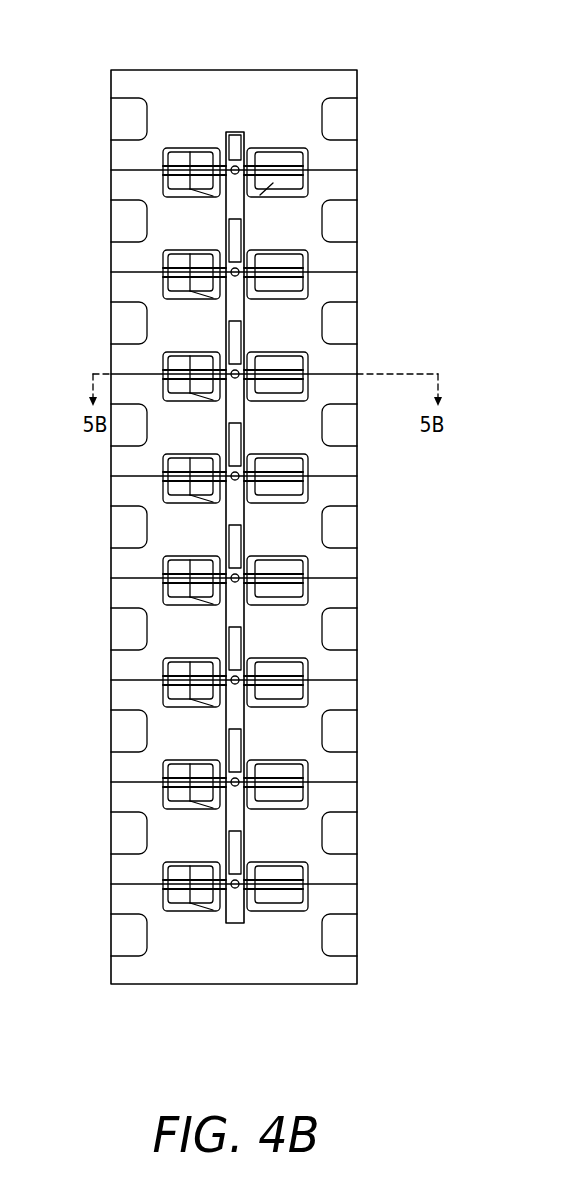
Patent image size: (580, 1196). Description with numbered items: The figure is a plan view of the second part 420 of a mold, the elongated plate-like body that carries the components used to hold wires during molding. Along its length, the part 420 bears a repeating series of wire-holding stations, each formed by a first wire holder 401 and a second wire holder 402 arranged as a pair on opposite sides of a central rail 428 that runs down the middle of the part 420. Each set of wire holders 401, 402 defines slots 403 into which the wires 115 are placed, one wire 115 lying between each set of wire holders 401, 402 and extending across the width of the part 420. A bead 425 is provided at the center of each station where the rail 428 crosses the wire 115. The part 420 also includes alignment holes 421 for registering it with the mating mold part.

The wires 115 is at (143, 270).
The first wire holder 401 is at (193, 148).
The second wire holder 402 is at (308, 184).
The slots 403 is at (270, 165).
The second part of mold 420 is at (100, 70).
The alignment holes 421 is at (347, 70).
The bead 425 is at (239, 173).
The rail 428 is at (246, 208).